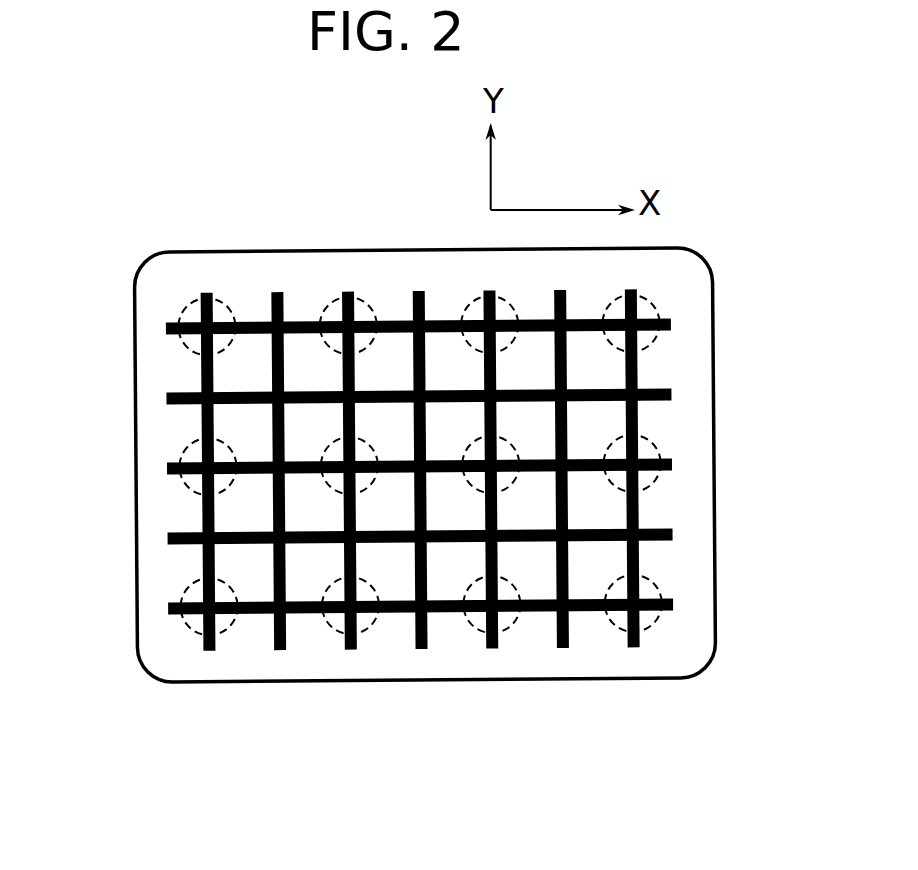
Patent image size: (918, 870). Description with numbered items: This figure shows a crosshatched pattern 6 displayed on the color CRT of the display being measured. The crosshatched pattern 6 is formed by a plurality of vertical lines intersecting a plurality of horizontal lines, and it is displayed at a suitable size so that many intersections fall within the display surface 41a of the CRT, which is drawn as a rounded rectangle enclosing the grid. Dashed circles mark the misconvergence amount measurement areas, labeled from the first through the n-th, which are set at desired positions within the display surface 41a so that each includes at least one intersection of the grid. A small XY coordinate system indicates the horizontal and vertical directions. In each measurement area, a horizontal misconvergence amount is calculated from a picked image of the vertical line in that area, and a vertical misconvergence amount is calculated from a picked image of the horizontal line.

The display surface 41a is at (697, 288).
The crosshatched pattern 6 is at (637, 368).